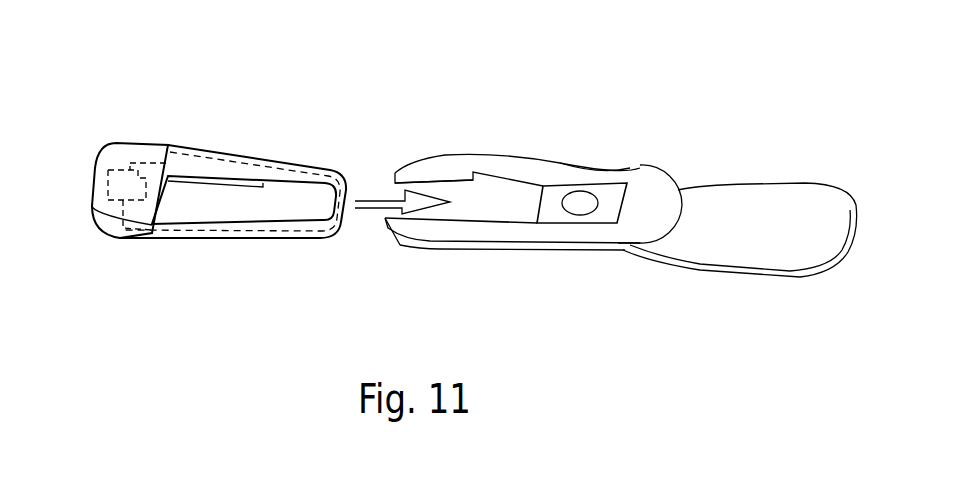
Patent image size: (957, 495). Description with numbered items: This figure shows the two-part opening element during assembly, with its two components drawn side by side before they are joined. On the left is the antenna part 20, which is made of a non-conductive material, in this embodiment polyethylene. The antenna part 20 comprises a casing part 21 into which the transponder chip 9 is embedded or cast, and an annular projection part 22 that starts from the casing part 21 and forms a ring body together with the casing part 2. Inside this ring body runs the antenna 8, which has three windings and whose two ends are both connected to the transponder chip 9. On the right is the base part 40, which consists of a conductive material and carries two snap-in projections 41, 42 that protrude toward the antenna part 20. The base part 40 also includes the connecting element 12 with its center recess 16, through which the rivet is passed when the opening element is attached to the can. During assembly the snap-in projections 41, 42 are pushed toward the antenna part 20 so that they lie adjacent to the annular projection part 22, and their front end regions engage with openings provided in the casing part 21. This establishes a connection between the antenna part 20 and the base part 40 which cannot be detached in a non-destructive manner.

The casing part 2 is at (773, 225).
The antenna 8 is at (228, 170).
The transponder chip 9 is at (127, 182).
The connecting element 12 is at (613, 198).
The center recess 16 is at (577, 205).
The antenna part 20 is at (137, 131).
The casing part 21 is at (110, 212).
The annular projection part 22 is at (262, 238).
The base part 40 is at (443, 148).
The snap-in projection 41 is at (513, 160).
The snap-in projection 42 is at (493, 228).